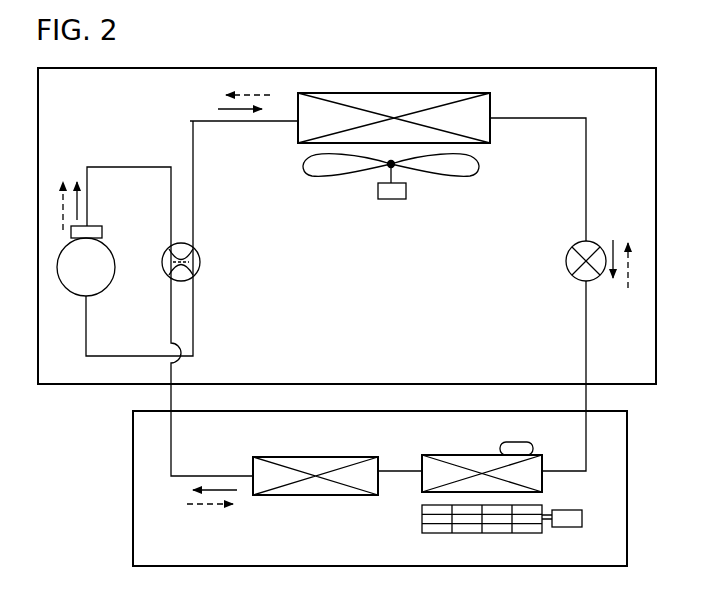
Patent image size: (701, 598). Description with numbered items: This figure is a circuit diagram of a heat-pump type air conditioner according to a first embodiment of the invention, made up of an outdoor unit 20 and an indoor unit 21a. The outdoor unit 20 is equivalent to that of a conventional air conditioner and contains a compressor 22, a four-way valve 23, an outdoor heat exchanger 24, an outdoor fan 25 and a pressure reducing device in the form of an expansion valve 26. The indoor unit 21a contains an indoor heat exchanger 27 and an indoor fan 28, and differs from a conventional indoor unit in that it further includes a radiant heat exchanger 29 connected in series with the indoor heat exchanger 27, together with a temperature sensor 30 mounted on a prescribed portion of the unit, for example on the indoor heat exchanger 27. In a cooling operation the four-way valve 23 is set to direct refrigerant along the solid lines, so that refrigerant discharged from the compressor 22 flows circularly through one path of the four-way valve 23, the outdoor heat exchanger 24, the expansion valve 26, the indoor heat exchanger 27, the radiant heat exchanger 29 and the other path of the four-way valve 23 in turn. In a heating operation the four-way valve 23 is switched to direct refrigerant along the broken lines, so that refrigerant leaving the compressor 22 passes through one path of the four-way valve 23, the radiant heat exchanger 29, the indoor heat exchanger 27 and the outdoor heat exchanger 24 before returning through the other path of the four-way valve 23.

The outdoor unit 20 is at (62, 372).
The indoor unit 21a is at (140, 522).
The compressor 22 is at (106, 255).
The four-way valve 23 is at (200, 262).
The outdoor heat exchanger 24 is at (492, 126).
The outdoor fan 25 is at (478, 172).
The expansion valve 26 is at (598, 242).
The indoor heat exchanger 27 is at (463, 456).
The indoor fan 28 is at (422, 534).
The radiant heat exchanger 29 is at (302, 457).
The temperature sensor 30 is at (530, 446).